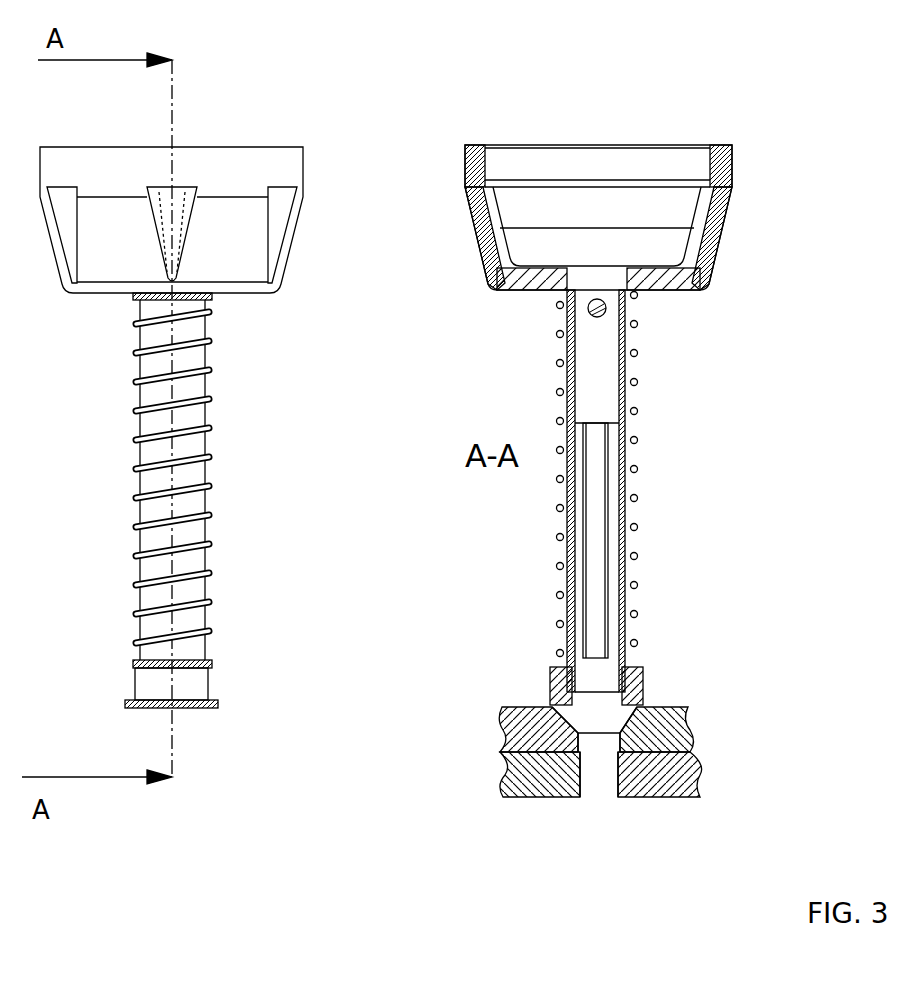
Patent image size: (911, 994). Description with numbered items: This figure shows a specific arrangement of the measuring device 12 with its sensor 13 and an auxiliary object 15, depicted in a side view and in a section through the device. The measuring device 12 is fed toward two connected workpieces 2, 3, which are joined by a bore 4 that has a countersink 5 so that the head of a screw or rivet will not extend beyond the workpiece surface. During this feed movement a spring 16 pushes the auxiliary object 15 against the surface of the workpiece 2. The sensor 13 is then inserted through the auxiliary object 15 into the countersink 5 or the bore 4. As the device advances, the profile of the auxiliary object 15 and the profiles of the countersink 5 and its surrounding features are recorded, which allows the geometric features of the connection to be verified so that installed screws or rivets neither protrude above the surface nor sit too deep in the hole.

The measuring device 12 is at (640, 213).
The sensor 13 is at (593, 537).
The spring 16 is at (630, 578).
The auxiliary object 15 is at (643, 682).
The workpiece 2 is at (652, 722).
The workpiece 3 is at (632, 773).
The countersink 5 is at (597, 720).
The bore 4 is at (595, 772).